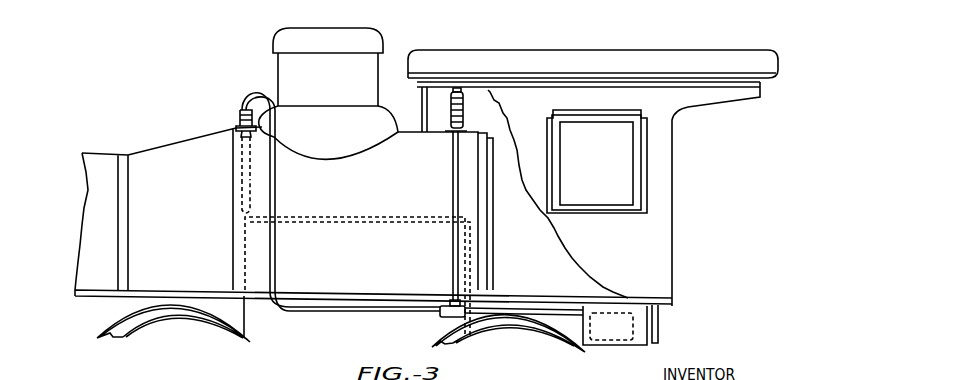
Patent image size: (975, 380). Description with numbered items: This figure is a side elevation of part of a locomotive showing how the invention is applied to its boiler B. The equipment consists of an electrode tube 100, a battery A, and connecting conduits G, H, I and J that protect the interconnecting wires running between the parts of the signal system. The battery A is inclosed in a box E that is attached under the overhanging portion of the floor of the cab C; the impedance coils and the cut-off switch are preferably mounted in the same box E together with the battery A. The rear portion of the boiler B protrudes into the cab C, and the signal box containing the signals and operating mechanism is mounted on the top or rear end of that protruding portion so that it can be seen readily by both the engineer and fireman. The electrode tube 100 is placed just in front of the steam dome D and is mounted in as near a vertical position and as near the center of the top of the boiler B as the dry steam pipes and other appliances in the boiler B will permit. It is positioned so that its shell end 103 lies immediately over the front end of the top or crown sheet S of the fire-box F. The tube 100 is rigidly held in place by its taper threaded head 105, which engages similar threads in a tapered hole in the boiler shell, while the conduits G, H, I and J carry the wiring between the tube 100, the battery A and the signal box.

The electrode tube 100 is at (242, 168).
The shell end 103 is at (242, 202).
The taper threaded head 105 is at (236, 127).
The battery A is at (611, 326).
The boiler B is at (383, 211).
The cab C is at (593, 174).
The steam dome D is at (328, 82).
The box E is at (583, 326).
The fire-box F is at (342, 247).
The connecting conduit G is at (273, 214).
The connecting conduit H is at (383, 318).
The connecting conduit I is at (449, 108).
The connecting conduit J is at (527, 315).
The crown sheet S is at (362, 218).